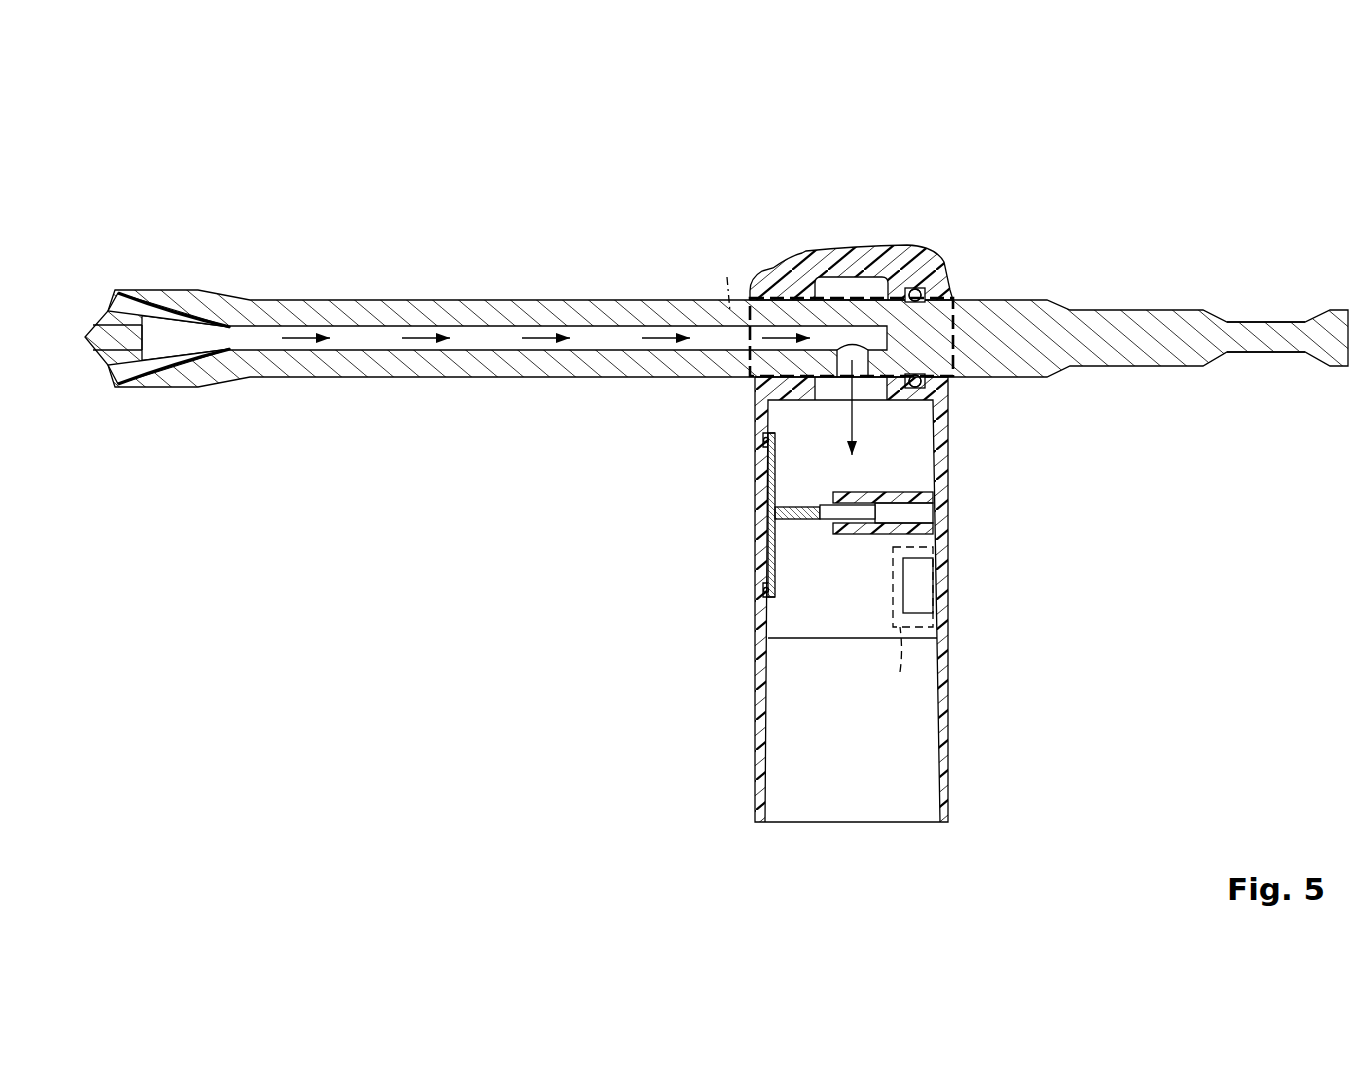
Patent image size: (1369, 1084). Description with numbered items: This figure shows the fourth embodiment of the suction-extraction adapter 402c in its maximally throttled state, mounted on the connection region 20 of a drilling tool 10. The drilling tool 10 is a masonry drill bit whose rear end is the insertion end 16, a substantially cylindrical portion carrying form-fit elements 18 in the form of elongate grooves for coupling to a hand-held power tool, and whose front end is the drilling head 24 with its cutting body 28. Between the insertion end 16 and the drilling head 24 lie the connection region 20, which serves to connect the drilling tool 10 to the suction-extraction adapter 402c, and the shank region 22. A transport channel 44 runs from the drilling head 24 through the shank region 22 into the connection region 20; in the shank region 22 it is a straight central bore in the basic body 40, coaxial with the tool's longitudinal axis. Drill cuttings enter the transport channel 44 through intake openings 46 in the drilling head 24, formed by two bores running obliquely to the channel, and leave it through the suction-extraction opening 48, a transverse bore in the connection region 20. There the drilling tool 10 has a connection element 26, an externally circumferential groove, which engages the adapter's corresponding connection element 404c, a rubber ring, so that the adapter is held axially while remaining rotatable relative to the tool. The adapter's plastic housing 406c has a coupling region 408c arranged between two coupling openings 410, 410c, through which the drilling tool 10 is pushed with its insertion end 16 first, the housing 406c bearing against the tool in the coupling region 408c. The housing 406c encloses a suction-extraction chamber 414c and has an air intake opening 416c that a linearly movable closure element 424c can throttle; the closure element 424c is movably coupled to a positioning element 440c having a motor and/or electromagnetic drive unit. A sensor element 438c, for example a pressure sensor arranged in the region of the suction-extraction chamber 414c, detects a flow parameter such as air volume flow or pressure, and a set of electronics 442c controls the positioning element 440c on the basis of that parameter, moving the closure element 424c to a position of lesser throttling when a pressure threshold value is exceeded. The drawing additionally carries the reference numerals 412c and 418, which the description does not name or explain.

The drilling tool 10 is at (637, 178).
The insertion end 16 is at (1203, 278).
The form-fit elements 18 is at (1265, 322).
The connection region 20 is at (857, 195).
The shank region 22 is at (483, 282).
The drilling head 24 is at (163, 243).
The connection element 26 is at (930, 297).
The cutting body 28 is at (95, 340).
The basic body 40 is at (545, 310).
The transport channel 44 is at (604, 336).
The intake openings 46 is at (117, 300).
The suction-extraction opening 48 is at (859, 382).
The suction-extraction adapter 402c is at (918, 232).
The connection element 404c is at (920, 287).
The housing 406c is at (822, 262).
The coupling region 408c is at (715, 278).
The coupling opening 410 is at (958, 298).
The coupling opening 410c is at (748, 380).
The actuator unit 412c is at (975, 477).
The suction-extraction chamber 414c is at (815, 612).
The air intake opening 416c is at (765, 548).
The flow direction 418 is at (538, 340).
The closure element 424c is at (770, 460).
The sensor element 438c is at (925, 586).
The positioning element 440c is at (930, 512).
The set of electronics 442c is at (900, 667).